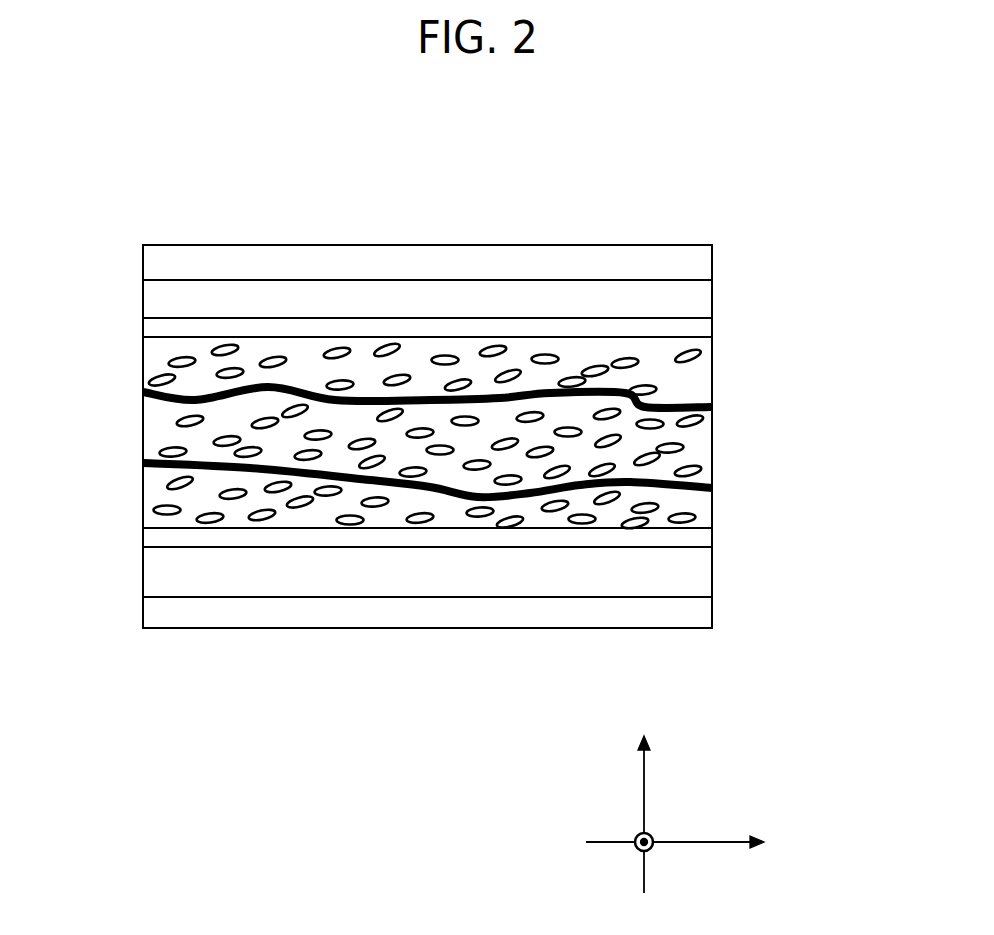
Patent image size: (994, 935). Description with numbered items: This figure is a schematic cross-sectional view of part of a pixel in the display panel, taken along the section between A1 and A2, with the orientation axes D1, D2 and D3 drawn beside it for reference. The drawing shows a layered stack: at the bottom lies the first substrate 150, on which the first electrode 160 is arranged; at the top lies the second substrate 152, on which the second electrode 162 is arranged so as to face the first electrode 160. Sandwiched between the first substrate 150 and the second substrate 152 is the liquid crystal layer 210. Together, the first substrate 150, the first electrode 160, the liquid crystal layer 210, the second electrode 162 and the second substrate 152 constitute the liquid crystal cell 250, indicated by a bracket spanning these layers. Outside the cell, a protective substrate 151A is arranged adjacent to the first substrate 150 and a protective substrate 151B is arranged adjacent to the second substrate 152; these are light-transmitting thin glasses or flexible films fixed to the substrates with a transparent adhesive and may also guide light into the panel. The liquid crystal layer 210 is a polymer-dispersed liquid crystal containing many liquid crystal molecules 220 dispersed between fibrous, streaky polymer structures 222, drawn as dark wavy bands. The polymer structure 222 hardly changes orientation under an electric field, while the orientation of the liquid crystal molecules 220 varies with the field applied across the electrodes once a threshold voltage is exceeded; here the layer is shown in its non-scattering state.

The protective substrate 151A is at (560, 247).
The protective substrate 151B is at (573, 630).
The second substrate 152 is at (713, 296).
The second electrode 162 is at (713, 327).
The liquid crystal layer 210 is at (471, 356).
The liquid crystal molecule 220 is at (388, 347).
The polymer structure 222 is at (294, 385).
The liquid crystal cell 250 is at (128, 282).
The first electrode 160 is at (713, 540).
The first substrate 150 is at (713, 586).
The cross-section end point A1 is at (144, 413).
The cross-section end point A2 is at (713, 413).
The first direction D1 is at (694, 846).
The second direction D2 is at (626, 861).
The third direction D3 is at (647, 798).